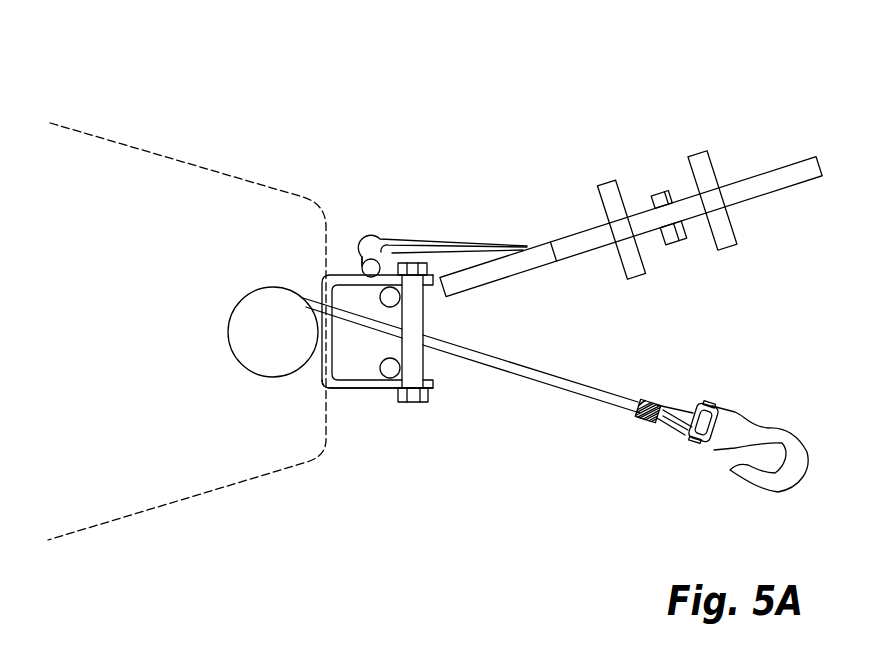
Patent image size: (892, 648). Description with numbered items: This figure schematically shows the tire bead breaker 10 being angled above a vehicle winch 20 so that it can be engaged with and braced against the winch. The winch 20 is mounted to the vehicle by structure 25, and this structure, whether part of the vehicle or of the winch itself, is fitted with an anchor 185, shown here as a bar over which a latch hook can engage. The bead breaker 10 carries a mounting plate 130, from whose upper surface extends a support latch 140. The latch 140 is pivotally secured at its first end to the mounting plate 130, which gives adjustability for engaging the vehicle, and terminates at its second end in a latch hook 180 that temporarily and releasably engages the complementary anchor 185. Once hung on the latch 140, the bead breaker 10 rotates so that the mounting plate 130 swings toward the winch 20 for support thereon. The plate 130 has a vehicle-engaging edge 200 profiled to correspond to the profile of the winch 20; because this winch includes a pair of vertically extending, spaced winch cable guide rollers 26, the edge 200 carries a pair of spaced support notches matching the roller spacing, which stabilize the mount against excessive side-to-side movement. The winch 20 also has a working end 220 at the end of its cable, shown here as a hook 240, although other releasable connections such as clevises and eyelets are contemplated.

The bead breaker 10 is at (639, 204).
The winch 20 is at (412, 410).
The structure 25 is at (358, 410).
The winch cable guide rollers 26 is at (418, 364).
The mounting plate 130 is at (520, 268).
The support latch 140 is at (427, 240).
The latch hook 180 is at (362, 262).
The anchor 185 is at (362, 265).
The vehicle-engaging edge 200 is at (433, 292).
The working end 220 is at (664, 380).
The hook 240 is at (773, 484).